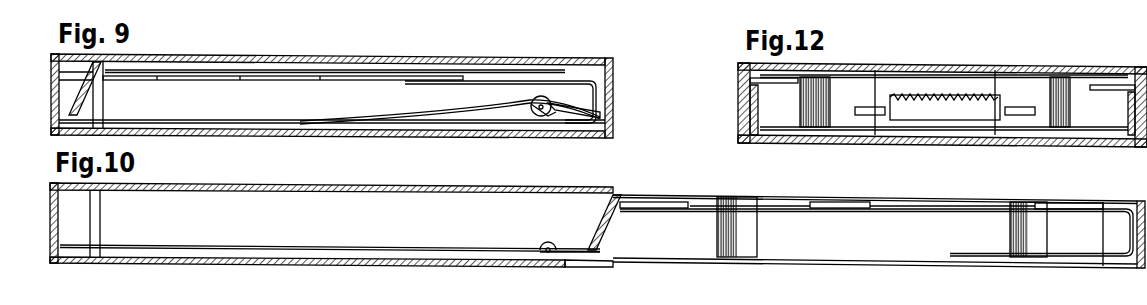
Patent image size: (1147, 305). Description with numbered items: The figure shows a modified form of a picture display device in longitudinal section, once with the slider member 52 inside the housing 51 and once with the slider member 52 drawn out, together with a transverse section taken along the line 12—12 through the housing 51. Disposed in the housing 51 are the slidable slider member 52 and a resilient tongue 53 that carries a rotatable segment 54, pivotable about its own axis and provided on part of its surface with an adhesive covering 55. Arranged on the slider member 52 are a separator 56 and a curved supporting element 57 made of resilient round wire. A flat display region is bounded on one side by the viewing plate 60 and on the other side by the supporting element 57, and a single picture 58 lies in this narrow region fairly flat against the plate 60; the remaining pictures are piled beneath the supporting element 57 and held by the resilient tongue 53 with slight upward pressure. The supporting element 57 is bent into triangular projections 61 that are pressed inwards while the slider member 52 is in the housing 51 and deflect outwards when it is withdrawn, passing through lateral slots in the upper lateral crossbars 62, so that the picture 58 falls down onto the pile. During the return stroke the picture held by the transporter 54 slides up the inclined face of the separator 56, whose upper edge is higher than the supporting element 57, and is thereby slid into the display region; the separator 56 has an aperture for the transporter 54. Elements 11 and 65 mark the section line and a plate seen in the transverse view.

In FIG. 9, the section line XI-XI 11 is at (42, 35).
In FIG. 10, the section line XI-XI 11 is at (36, 158).
In FIG. 9, the section line 12 is at (565, 148).
In FIG. 10, the section line 12 is at (565, 272).
In FIG. 9, the housing 51 is at (355, 78).
In FIG. 10, the housing 51 is at (250, 182).
In FIG. 9, the slider member 52 is at (614, 103).
In FIG. 10, the slider member 52 is at (1086, 270).
In FIG. 12, the slider member 52 is at (795, 137).
In FIG. 9, the resilient tongue 53 is at (445, 122).
In FIG. 10, the resilient tongue 53 is at (337, 245).
In FIG. 12, the resilient tongue 53 is at (876, 100).
In FIG. 9, the rotatable segment 54 is at (607, 119).
In FIG. 10, the rotatable segment 54 is at (558, 245).
In FIG. 12, the rotatable segment 54 is at (932, 115).
In FIG. 9, the adhesive covering 55 is at (537, 95).
In FIG. 10, the adhesive covering 55 is at (545, 249).
In FIG. 12, the adhesive covering 55 is at (927, 100).
In FIG. 9, the separator 56 is at (75, 92).
In FIG. 10, the separator 56 is at (590, 237).
In FIG. 12, the separator 56 is at (843, 115).
In FIG. 9, the supporting element 57 is at (416, 85).
In FIG. 10, the supporting element 57 is at (967, 200).
In FIG. 12, the supporting element 57 is at (1073, 85).
In FIG. 9, the picture 58 is at (275, 70).
In FIG. 12, the picture 58 is at (1027, 75).
In FIG. 9, the viewing plate 60 is at (400, 58).
In FIG. 10, the viewing plate 60 is at (400, 188).
In FIG. 12, the viewing plate 60 is at (962, 67).
In FIG. 9, the triangular projections 61 is at (141, 78).
In FIG. 10, the triangular projections 61 is at (665, 212).
In FIG. 10, the upper lateral crossbars 62 is at (758, 222).
In FIG. 12, the upper lateral crossbars 62 is at (740, 118).
In FIG. 10, the plate 65 is at (663, 203).
In FIG. 12, the plate 65 is at (740, 79).